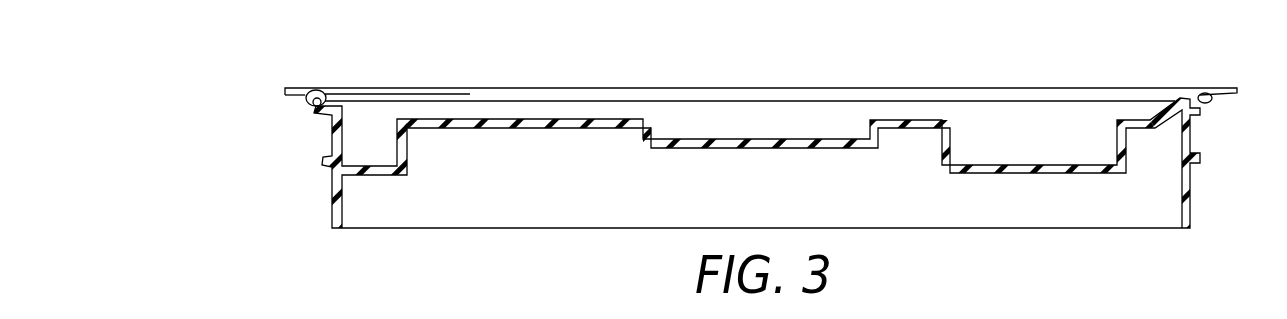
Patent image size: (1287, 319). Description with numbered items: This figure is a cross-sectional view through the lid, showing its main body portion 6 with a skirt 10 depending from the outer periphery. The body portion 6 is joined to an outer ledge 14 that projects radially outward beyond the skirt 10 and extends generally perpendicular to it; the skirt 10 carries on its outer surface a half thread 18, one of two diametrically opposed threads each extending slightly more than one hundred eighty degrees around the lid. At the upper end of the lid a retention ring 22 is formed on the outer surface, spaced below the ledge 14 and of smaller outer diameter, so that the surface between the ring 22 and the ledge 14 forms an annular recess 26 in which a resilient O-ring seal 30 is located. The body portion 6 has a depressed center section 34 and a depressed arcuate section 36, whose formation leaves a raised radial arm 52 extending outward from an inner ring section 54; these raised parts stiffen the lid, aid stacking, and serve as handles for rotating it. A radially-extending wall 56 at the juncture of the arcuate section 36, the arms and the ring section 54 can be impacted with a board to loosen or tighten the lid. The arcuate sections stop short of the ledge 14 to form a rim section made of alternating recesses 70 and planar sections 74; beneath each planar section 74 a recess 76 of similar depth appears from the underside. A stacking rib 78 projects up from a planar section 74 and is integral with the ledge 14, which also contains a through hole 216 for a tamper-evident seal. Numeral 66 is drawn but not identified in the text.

The main body portion 6 is at (343, 126).
The skirt 10 is at (331, 203).
The outer ledge 14 is at (291, 88).
The half thread 18 is at (1200, 128).
The retention ring 22 is at (327, 112).
The annular recess 26 is at (316, 105).
The O-ring seal 30 is at (1208, 100).
The depressed center section 34 is at (760, 139).
The depressed arcuate section 36 is at (1042, 165).
The raised radial arm 52 is at (525, 120).
The inner ring section 54 is at (912, 120).
The radially-extending wall 56 is at (962, 148).
The inner corner 66 is at (1104, 138).
The recess 70 is at (366, 155).
The planar section 74 is at (1130, 120).
The recess 76 is at (1158, 137).
The rib 78 is at (1176, 97).
The through hole 216 is at (311, 102).